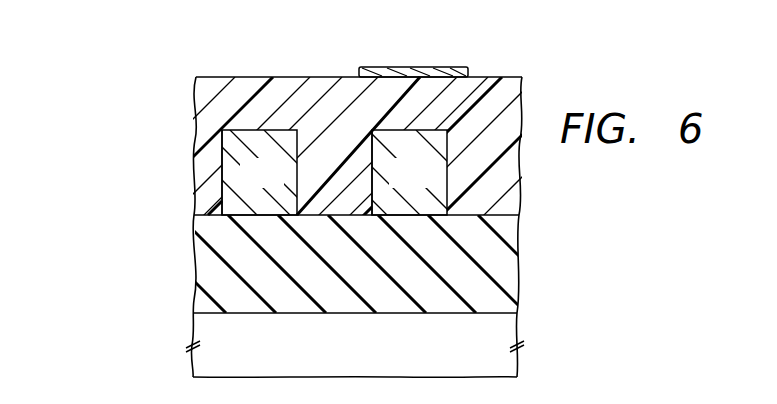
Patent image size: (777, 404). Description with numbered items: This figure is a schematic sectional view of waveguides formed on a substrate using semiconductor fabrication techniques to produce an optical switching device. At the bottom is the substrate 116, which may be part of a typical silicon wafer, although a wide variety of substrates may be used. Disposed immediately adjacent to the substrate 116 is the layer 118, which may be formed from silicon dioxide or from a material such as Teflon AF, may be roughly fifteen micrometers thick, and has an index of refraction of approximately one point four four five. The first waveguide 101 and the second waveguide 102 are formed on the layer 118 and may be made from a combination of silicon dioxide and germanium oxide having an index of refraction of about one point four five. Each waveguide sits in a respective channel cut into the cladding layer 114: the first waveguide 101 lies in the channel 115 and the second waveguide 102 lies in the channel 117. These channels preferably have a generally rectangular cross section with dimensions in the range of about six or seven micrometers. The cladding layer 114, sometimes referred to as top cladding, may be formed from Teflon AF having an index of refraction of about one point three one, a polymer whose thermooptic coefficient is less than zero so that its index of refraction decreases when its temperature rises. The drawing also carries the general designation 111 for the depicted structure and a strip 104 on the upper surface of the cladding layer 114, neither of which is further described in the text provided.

The semiconductor device structure 111 is at (127, 218).
The cladding layer 114 is at (209, 93).
The channel 117 is at (227, 147).
The channel 115 is at (372, 147).
The conductive strip 104 is at (428, 67).
The second waveguide 102 is at (281, 183).
The first waveguide 101 is at (430, 185).
The layer 118 is at (200, 268).
The substrate 116 is at (378, 358).